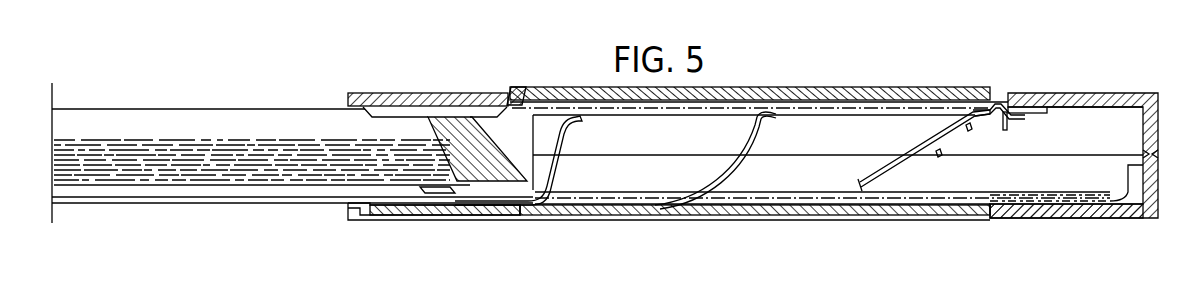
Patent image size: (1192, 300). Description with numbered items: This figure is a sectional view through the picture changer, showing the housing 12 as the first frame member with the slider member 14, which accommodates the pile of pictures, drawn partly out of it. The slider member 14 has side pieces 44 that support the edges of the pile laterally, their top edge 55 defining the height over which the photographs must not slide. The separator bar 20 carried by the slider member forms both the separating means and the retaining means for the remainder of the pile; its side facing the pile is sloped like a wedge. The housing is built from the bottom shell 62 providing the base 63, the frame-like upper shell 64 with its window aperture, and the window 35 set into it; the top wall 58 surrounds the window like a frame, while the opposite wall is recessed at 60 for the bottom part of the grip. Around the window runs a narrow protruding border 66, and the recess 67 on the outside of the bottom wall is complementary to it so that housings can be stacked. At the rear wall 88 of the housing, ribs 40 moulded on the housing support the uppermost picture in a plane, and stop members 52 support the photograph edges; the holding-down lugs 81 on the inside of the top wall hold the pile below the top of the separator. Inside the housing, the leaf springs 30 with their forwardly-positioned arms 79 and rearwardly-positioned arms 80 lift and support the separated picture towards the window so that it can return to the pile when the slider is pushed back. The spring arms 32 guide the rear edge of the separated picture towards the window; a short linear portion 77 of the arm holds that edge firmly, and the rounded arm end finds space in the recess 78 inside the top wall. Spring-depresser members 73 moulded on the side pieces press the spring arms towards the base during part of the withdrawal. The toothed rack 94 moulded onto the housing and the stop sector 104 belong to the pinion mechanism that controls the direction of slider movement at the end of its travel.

The housing 12 is at (1094, 97).
The slider member 14 is at (238, 204).
The separator bar 20 is at (442, 117).
The leaf springs 30 is at (563, 206).
The spring arms 32 is at (887, 169).
The window 35 is at (826, 98).
The ribs 40 is at (1040, 113).
The side pieces 44 is at (220, 123).
The stop members 52 is at (1005, 132).
The top edge 55 is at (137, 108).
The top wall 58 is at (378, 93).
The recess 60 is at (420, 222).
The bottom shell 62 is at (1085, 218).
The base 63 is at (818, 222).
The upper shell 64 is at (1040, 95).
The border 66 is at (518, 92).
The recess 67 is at (613, 216).
The spring-depresser members 73 is at (455, 194).
The linear portion 77 is at (990, 117).
The recess 78 is at (1004, 101).
The forwardly-positioned arms 79 is at (562, 137).
The rearwardly-positioned arms 80 is at (763, 131).
The holding-down lugs 81 is at (474, 108).
The rear wall 88 is at (1155, 125).
The toothed rack 94 is at (1010, 200).
The stop sector 104 is at (1123, 186).